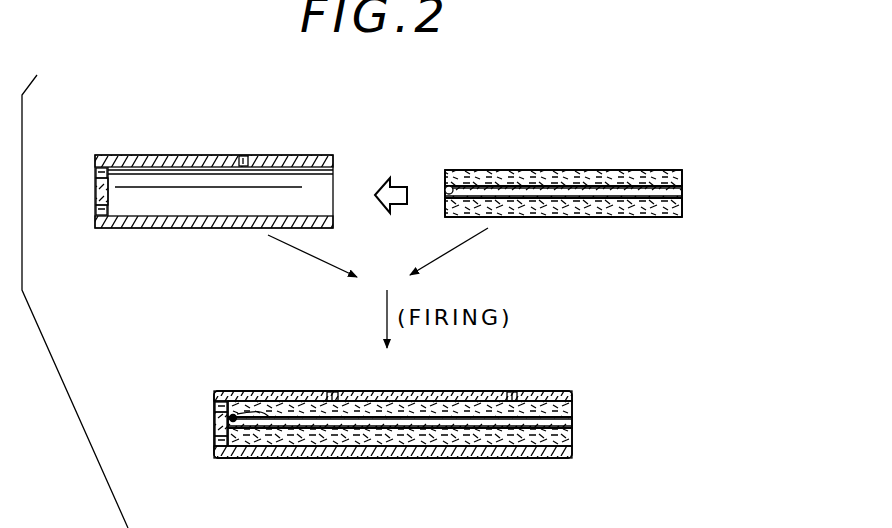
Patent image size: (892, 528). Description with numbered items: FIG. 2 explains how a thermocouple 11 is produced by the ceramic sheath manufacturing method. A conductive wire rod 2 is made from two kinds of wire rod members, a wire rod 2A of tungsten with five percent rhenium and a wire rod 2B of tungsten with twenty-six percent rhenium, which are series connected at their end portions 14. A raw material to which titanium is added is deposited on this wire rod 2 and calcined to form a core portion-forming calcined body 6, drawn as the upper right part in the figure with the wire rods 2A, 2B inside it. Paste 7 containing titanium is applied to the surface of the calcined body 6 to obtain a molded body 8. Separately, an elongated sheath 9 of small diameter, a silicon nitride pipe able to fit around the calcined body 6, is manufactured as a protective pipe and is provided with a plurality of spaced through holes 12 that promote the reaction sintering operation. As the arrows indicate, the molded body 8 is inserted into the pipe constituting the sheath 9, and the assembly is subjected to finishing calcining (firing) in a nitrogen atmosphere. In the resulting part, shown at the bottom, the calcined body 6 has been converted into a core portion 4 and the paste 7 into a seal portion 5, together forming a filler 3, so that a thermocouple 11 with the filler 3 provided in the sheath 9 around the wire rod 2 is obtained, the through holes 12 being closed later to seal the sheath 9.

The conductive wire rod 2 is at (503, 184).
The wire rod 2A is at (652, 174).
The wire rod 2B is at (650, 204).
The filler 3 is at (532, 458).
The core portion 4 is at (290, 430).
The seal portion 5 is at (368, 410).
The core portion-forming calcined body 6 is at (537, 193).
The paste 7 is at (537, 185).
The molded body 8 is at (588, 168).
The sheath 9 is at (169, 160).
The thermocouple 11 is at (448, 390).
The through holes 12 is at (242, 156).
The end portions 14 is at (447, 186).